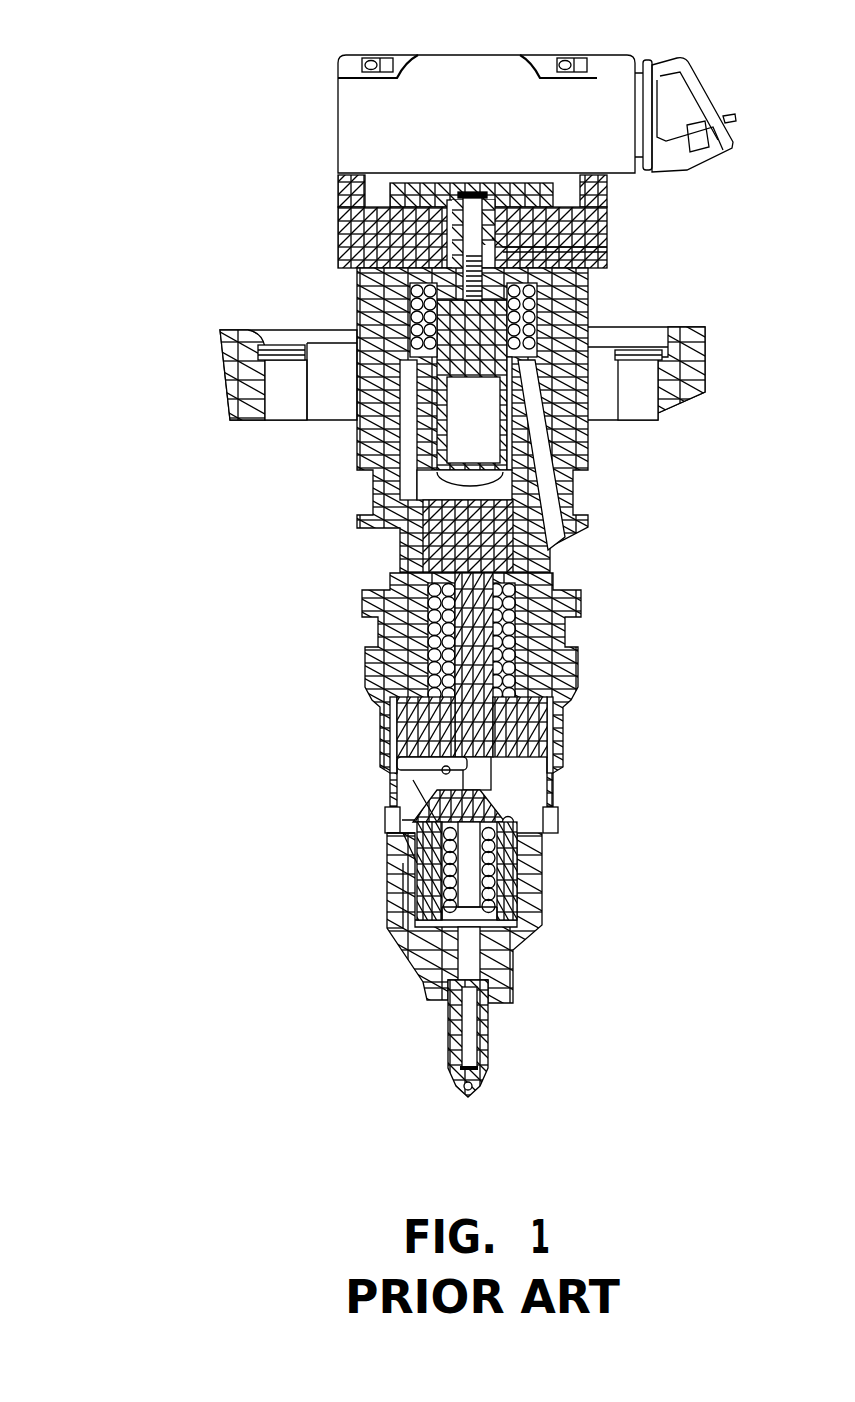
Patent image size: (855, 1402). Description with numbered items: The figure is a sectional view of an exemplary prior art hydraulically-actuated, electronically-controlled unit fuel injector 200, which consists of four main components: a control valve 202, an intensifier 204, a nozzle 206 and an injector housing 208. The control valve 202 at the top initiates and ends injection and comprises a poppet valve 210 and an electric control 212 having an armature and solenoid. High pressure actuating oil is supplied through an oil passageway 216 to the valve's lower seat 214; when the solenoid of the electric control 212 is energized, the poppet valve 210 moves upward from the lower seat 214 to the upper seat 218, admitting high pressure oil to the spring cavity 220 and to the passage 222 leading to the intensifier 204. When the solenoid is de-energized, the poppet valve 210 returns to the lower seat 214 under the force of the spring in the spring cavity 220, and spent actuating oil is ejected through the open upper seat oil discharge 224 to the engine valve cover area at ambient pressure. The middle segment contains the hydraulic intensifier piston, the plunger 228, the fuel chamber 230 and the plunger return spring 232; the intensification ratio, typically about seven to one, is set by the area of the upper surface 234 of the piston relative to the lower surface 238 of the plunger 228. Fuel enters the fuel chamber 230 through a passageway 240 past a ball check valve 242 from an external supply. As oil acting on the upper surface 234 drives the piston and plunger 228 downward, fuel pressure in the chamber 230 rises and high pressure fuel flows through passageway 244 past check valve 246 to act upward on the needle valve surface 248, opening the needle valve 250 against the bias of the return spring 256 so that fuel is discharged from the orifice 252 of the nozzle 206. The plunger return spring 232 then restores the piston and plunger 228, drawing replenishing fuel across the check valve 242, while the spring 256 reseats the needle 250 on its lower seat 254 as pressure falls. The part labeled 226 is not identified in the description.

The fuel injector 200 is at (473, 549).
The control valve 202 is at (400, 387).
The intensifier 204 is at (397, 637).
The nozzle 206 is at (520, 967).
The injector housing 208 is at (592, 452).
The poppet valve 210 is at (410, 362).
The electric control 212 is at (372, 122).
The lower seat 214 is at (588, 425).
The oil passageway 216 is at (565, 552).
The upper seat 218 is at (428, 262).
The spring cavity 220 is at (507, 290).
The passage 222 is at (357, 342).
The upper seat oil discharge 224 is at (613, 247).
The intensifier piston 226 is at (393, 510).
The plunger 228 is at (378, 738).
The fuel chamber 230 is at (440, 768).
The plunger return spring 232 is at (555, 627).
The upper surface 234 is at (400, 486).
The lower surface 238 is at (520, 766).
The passageway 240 is at (385, 782).
The check valve 242 is at (422, 843).
The passageway 244 is at (510, 888).
The check valve 246 is at (553, 803).
The needle valve surface 248 is at (417, 985).
The needle valve 250 is at (468, 1028).
The orifice 252 is at (486, 1079).
The lower seat 254 is at (413, 962).
The return spring 256 is at (407, 888).